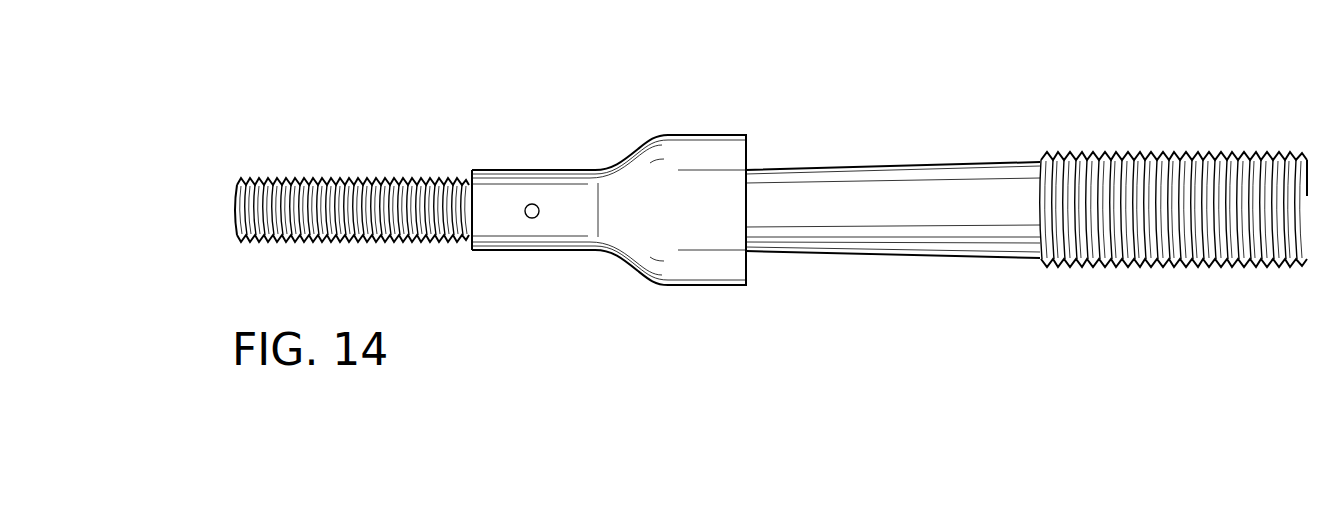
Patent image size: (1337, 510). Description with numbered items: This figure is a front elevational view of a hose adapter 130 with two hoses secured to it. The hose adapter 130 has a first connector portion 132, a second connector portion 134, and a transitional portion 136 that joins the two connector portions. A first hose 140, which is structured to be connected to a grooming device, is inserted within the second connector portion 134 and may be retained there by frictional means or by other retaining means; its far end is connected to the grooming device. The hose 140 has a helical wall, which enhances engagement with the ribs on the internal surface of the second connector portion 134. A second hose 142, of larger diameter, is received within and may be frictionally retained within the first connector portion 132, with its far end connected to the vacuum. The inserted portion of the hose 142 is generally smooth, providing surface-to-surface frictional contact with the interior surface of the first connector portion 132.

The hose adapter 130 is at (632, 196).
The first connector portion 132 is at (704, 279).
The second connector portion 134 is at (531, 250).
The transitional portion 136 is at (642, 281).
The first hose 140 is at (328, 182).
The second hose 142 is at (910, 170).